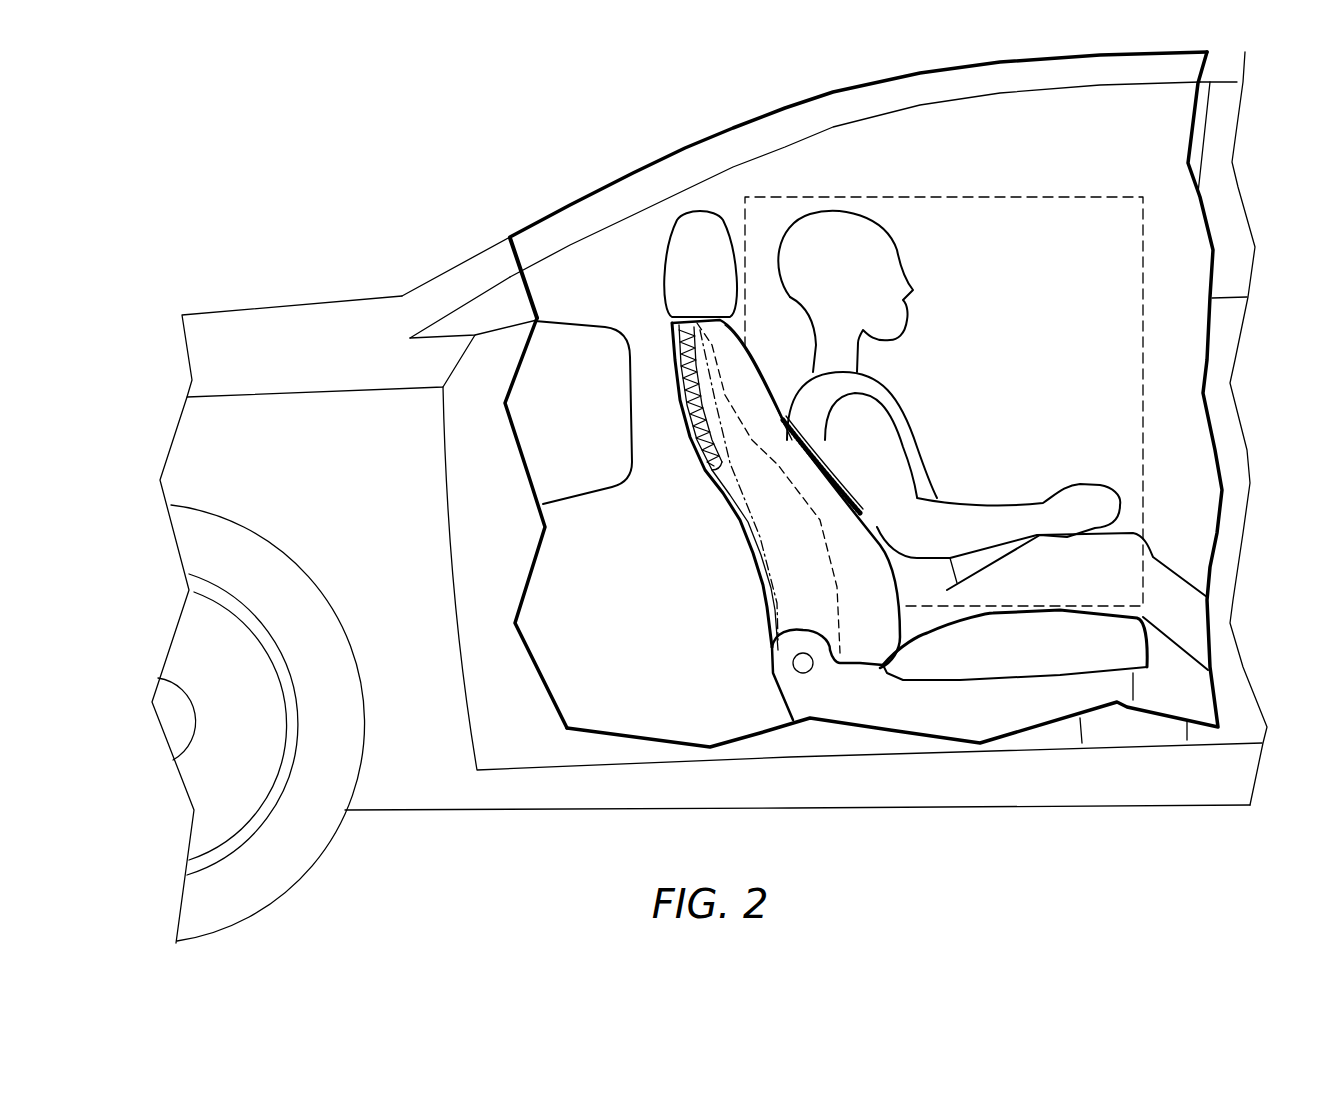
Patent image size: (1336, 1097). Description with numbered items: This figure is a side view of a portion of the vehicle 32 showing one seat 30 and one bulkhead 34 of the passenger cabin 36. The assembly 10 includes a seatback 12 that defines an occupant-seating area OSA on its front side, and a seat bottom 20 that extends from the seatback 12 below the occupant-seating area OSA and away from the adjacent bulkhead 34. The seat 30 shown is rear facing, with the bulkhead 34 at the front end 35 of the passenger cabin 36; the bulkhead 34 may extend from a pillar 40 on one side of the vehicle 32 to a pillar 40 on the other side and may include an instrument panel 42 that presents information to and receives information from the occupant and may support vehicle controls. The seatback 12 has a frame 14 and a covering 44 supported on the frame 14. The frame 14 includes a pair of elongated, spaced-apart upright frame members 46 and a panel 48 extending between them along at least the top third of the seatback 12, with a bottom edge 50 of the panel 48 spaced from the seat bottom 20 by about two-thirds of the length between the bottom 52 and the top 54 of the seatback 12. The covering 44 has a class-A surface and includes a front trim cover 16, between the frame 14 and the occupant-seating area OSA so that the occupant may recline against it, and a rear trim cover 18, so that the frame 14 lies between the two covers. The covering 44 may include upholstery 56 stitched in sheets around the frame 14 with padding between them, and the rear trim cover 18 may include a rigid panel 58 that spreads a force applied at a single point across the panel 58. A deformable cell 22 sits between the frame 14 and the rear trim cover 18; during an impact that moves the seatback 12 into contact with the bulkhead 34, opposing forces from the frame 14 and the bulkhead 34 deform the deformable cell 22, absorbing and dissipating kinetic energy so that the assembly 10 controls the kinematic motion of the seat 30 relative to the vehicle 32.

The assembly 10 is at (685, 458).
The seatback 12 is at (800, 570).
The frame 14 is at (753, 540).
The front trim cover 16 is at (737, 338).
The rear trim cover 18 is at (683, 435).
The seat bottom 20 is at (1010, 650).
The deformable cell 22 is at (667, 290).
The seat 30 is at (737, 643).
The vehicle 32 is at (283, 306).
The bulkhead 34 is at (567, 482).
The front end 35 is at (563, 297).
The passenger cabin 36 is at (843, 160).
The pillar 40 is at (450, 278).
The instrument panel 42 is at (632, 397).
The covering 44 is at (723, 492).
The upright frame members 46 is at (833, 540).
The panel 48 is at (697, 385).
The bottom edge 50 is at (760, 458).
The bottom 52 is at (900, 677).
The top 54 is at (728, 327).
The upholstery 56 is at (760, 572).
The panel 58 is at (667, 343).
The occupant-seating area OSA is at (1143, 222).